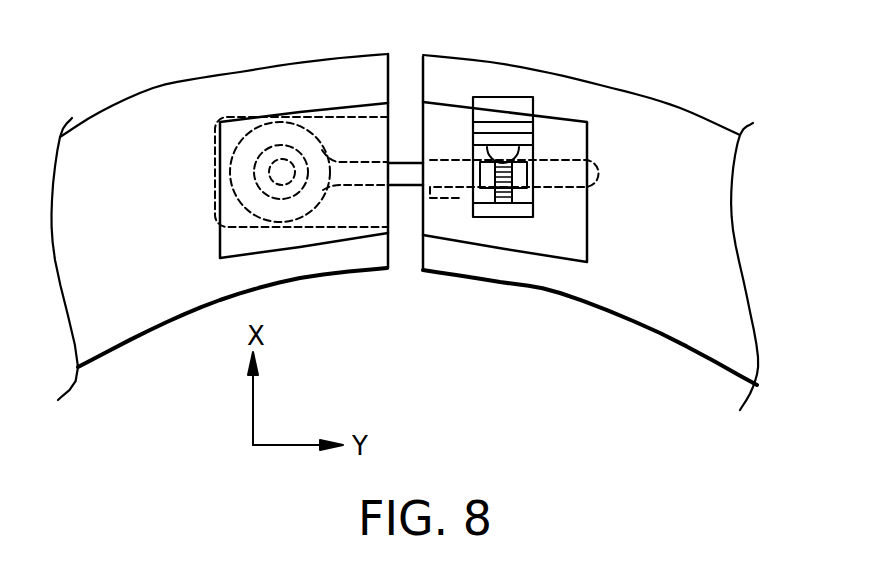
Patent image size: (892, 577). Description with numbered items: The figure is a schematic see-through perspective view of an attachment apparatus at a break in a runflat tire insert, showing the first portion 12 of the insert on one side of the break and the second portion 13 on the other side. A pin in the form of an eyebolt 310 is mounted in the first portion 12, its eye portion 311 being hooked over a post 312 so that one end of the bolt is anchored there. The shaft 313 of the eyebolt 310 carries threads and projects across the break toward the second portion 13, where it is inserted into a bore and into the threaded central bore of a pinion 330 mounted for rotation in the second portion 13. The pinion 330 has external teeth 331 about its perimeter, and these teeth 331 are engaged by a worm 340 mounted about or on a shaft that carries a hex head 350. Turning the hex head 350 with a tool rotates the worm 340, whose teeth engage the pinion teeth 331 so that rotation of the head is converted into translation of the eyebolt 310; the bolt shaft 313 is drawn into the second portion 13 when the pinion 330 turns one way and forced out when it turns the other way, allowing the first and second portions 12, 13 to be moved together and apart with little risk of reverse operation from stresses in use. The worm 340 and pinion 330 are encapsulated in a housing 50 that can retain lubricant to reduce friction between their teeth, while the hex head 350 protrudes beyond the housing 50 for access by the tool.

The first portion 12 is at (159, 251).
The second portion 13 is at (702, 253).
The housing 50 is at (510, 110).
The eyebolt 310 is at (403, 163).
The eye portion 311 is at (242, 172).
The post 312 is at (278, 173).
The shaft 313 is at (452, 177).
The pinion 330 is at (512, 187).
The pinion teeth 331 is at (499, 202).
The worm 340 is at (507, 147).
The hex head 350 is at (503, 150).